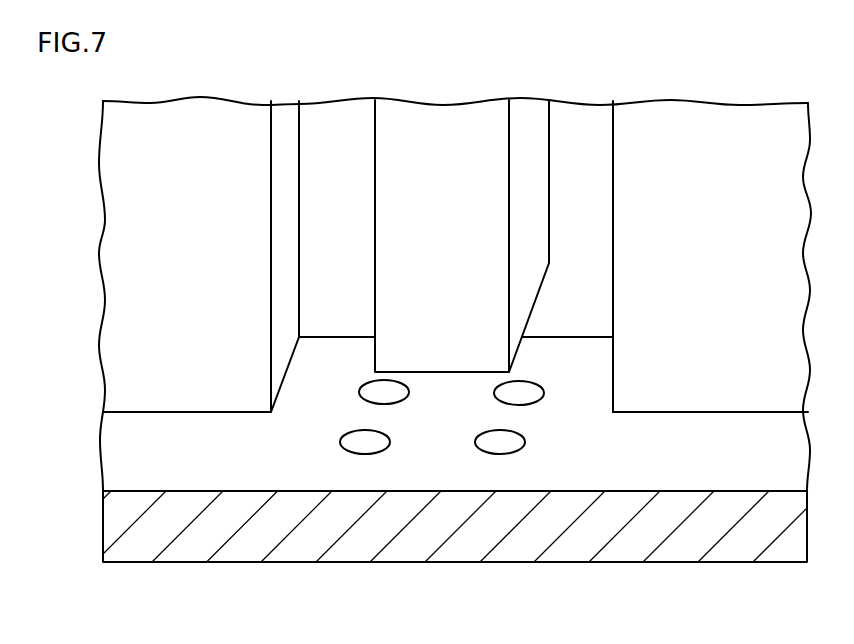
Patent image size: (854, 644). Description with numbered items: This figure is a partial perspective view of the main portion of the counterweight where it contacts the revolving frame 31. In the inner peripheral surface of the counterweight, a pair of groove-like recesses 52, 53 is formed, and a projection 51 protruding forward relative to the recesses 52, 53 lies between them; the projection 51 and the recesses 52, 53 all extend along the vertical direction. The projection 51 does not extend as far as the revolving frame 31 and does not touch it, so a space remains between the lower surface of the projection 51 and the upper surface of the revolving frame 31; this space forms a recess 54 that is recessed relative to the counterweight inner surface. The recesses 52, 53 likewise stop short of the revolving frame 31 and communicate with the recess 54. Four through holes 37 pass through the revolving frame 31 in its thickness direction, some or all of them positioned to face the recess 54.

The revolving frame 31 is at (628, 542).
The through hole 37 is at (363, 440).
The projection 51 is at (458, 228).
The recess 52 is at (337, 188).
The recess 53 is at (576, 188).
The recess 54 is at (430, 388).